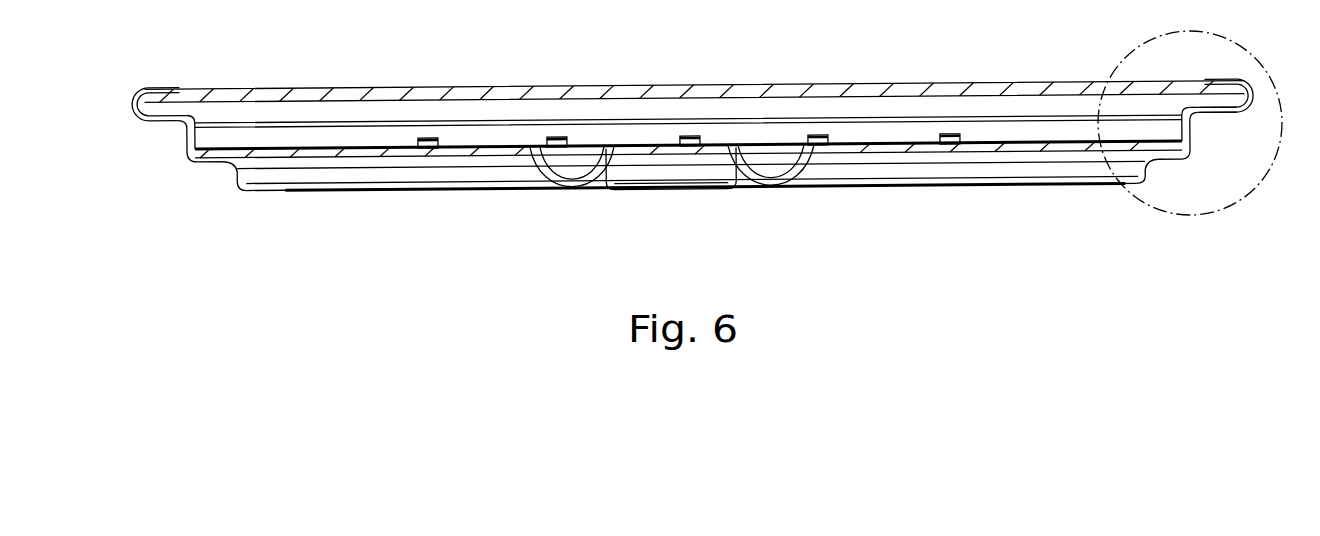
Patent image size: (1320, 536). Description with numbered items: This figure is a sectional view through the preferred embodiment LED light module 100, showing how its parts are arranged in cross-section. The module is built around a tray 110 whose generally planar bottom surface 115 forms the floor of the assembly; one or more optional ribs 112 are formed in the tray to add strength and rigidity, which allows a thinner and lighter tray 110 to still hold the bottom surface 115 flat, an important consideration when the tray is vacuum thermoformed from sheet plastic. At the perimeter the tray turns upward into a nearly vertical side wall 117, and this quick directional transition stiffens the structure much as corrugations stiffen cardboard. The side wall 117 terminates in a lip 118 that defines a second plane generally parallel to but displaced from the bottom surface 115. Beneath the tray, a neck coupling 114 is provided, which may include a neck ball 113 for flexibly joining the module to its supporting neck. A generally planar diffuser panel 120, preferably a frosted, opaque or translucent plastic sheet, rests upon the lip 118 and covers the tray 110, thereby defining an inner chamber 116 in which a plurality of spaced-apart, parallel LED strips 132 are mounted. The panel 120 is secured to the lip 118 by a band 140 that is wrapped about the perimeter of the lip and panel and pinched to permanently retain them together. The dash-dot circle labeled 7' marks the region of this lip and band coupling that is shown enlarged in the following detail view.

The LED light module 100 is at (1028, 43).
The tray 110 is at (373, 155).
The ribs 112 is at (252, 182).
The neck ball 113 is at (687, 190).
The neck coupling 114 is at (745, 190).
The bottom surface 115 is at (510, 137).
The inner chamber 116 is at (1170, 128).
The side wall 117 is at (1196, 135).
The lip 118 is at (1214, 100).
The diffuser panel 120 is at (614, 97).
The LED strips 132 is at (937, 142).
The band 140 is at (1251, 97).
The detail circle for FIG. 7 7' is at (1190, 146).